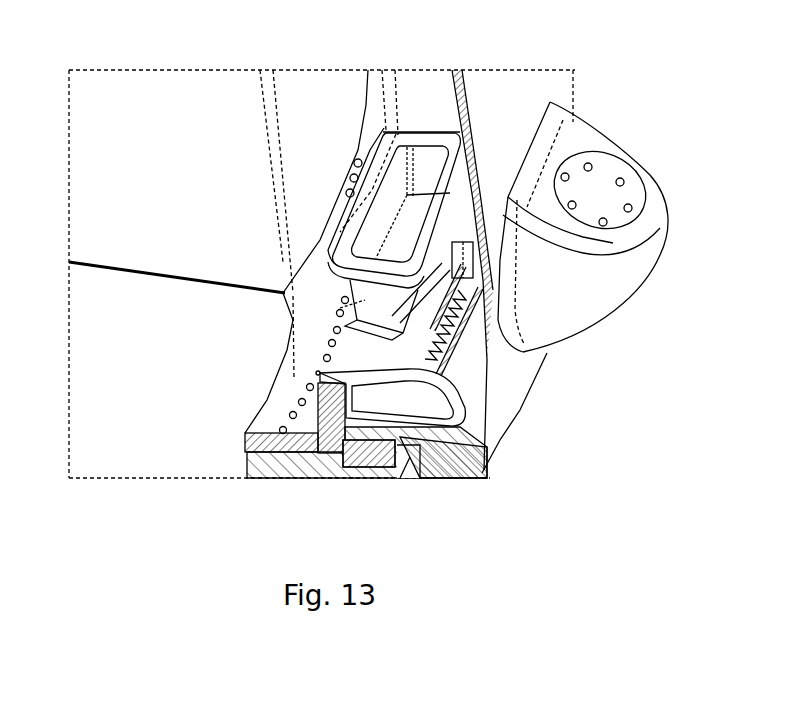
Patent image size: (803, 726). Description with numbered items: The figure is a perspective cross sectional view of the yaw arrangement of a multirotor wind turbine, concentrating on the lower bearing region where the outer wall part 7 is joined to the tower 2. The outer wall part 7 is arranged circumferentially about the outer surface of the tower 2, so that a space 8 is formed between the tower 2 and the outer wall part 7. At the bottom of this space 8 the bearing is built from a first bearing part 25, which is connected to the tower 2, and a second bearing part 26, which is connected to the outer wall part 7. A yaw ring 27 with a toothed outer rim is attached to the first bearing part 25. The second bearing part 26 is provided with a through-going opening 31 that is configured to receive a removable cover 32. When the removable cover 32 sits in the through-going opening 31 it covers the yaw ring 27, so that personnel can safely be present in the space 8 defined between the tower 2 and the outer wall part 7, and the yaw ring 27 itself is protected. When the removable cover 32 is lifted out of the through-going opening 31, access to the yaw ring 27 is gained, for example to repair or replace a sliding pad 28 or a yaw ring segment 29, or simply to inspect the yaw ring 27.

The tower 2 is at (293, 317).
The outer wall part 7 is at (517, 108).
The space 8 is at (400, 107).
The first bearing part 25 is at (303, 468).
The second bearing part 26 is at (400, 437).
The yaw ring 27 is at (363, 455).
The sliding pad 28 is at (413, 350).
The yaw ring segment 29 is at (427, 322).
The through-going opening 31 is at (365, 350).
The removable cover 32 is at (432, 160).